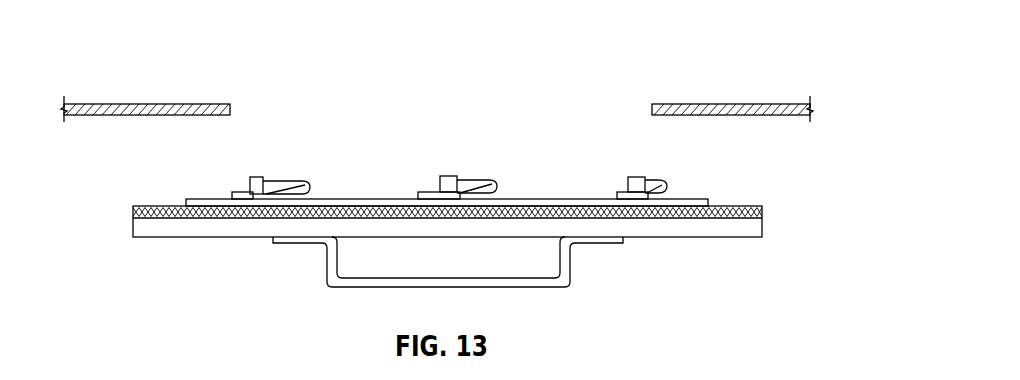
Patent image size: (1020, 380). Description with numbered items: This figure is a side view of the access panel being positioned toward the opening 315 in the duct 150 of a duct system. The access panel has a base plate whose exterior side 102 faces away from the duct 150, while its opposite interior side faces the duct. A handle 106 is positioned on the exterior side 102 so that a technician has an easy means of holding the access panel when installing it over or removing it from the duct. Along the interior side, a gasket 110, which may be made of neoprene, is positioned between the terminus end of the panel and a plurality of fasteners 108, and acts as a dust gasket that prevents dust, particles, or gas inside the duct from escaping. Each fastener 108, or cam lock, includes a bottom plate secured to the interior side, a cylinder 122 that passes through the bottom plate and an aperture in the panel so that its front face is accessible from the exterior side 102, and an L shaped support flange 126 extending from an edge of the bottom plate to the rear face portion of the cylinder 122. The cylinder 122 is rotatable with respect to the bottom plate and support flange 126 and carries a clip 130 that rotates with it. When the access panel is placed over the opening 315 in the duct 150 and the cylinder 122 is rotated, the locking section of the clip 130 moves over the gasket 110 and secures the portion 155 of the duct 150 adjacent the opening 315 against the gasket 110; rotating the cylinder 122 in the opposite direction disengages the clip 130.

The exterior side 102 is at (152, 228).
The handle 106 is at (330, 268).
The fastener 108 is at (255, 173).
The gasket 110 is at (148, 210).
The cylinder 122 is at (440, 184).
The L shaped support flange 126 is at (420, 196).
The clip 130 is at (478, 182).
The duct 150 is at (105, 106).
The portion of the duct 155 is at (226, 104).
The opening 315 is at (271, 80).